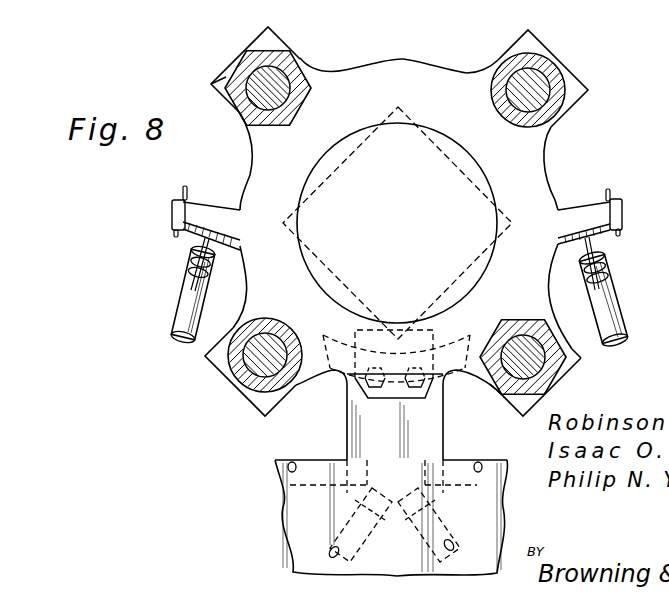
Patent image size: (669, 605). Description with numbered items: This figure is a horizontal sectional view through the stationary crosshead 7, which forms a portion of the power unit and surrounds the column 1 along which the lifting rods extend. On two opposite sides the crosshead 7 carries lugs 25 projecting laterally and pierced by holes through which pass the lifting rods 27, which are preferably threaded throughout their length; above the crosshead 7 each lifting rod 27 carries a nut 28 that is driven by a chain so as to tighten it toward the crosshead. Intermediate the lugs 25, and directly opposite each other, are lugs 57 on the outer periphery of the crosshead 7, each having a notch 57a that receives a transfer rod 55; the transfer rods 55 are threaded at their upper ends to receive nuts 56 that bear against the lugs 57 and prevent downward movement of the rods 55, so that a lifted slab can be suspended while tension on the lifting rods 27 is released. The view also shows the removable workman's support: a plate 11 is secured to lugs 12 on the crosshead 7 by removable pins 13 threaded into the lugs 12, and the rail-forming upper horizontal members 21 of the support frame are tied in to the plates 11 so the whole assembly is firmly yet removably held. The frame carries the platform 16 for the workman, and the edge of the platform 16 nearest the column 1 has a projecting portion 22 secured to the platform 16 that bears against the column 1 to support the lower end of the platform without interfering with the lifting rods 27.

The column 1 is at (453, 281).
The stationary crosshead 7 is at (252, 160).
The plate 11 is at (592, 260).
The lugs 12 is at (210, 210).
The removable pins 13 is at (172, 208).
The platform 16 is at (300, 512).
The upper horizontal members 21 is at (178, 312).
The projecting portion 22 is at (347, 434).
The lugs 25 is at (577, 105).
The lifting rods 27 is at (533, 77).
The nuts 28 is at (558, 83).
The transfer rods 55 is at (273, 78).
The nuts 56 is at (239, 64).
The lugs 57 is at (262, 34).
The notches 57a is at (226, 78).